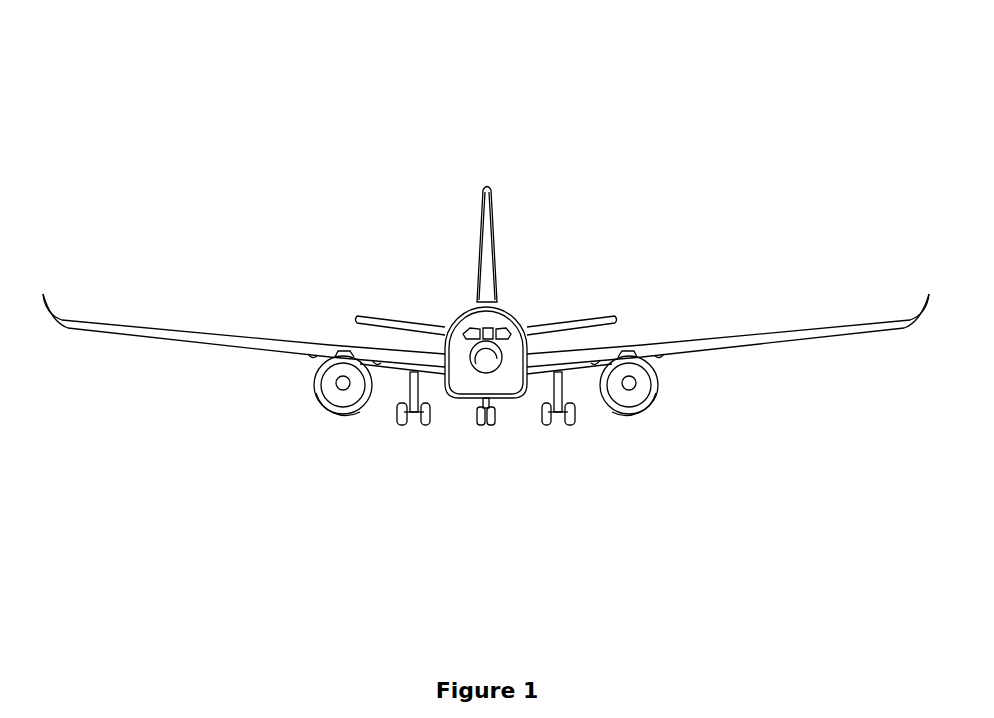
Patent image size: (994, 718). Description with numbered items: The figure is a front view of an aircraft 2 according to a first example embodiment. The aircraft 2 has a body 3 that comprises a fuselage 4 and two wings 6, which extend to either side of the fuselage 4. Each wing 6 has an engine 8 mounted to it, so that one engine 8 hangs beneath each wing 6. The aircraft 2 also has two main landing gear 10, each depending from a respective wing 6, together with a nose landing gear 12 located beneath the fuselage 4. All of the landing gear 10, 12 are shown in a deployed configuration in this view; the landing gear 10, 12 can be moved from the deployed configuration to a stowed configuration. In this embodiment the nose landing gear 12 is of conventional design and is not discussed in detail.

The aircraft 2 is at (273, 102).
The body 3 is at (583, 222).
The fuselage 4 is at (462, 306).
The wing 6 is at (258, 336).
The engine 8 is at (318, 403).
The main landing gear 10 is at (397, 437).
The nose landing gear 12 is at (479, 437).